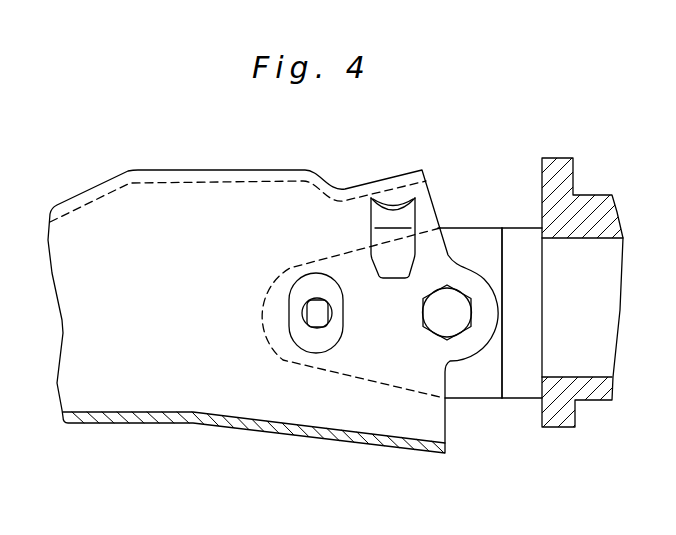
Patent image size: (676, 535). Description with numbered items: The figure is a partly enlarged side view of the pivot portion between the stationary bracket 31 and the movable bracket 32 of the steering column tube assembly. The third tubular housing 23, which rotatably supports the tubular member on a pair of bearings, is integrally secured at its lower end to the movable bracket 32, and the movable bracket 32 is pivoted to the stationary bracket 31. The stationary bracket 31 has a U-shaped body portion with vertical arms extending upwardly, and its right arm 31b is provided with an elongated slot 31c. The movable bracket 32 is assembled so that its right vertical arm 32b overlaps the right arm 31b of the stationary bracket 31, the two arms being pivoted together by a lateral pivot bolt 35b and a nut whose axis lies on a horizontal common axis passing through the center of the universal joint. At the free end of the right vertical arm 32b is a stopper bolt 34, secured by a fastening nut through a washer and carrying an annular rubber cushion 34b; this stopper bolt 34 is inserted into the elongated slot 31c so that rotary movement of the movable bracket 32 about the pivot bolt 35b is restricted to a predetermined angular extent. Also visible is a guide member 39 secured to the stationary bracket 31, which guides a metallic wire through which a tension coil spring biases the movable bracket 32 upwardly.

The third tubular housing 23 is at (598, 208).
The stationary bracket 31 is at (202, 430).
The right arm 31b is at (216, 192).
The elongated slot 31c is at (342, 312).
The movable bracket 32 is at (518, 405).
The right vertical arm 32b is at (480, 240).
The stopper bolt 34 is at (298, 296).
The annular rubber cushion 34b is at (305, 315).
The bolt 35b is at (455, 327).
The guide member 39 is at (393, 205).